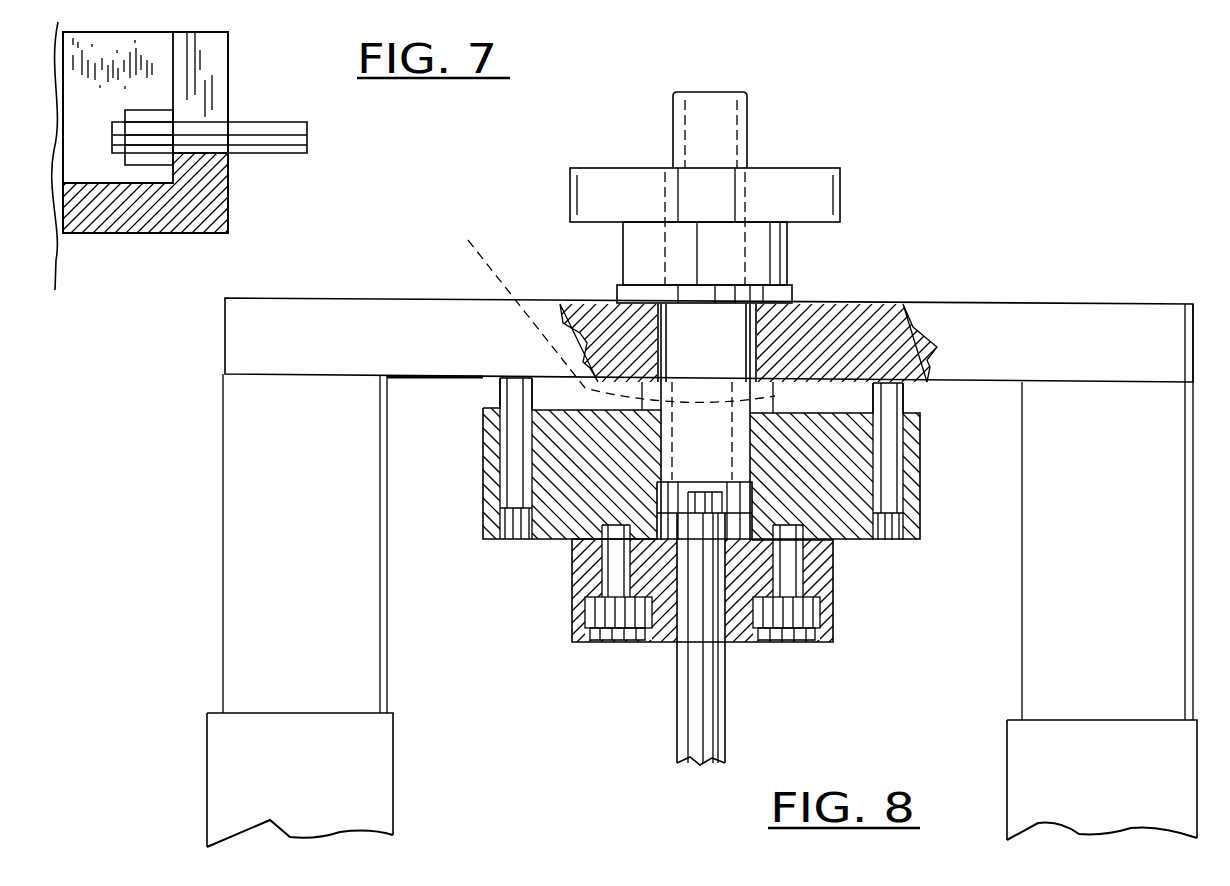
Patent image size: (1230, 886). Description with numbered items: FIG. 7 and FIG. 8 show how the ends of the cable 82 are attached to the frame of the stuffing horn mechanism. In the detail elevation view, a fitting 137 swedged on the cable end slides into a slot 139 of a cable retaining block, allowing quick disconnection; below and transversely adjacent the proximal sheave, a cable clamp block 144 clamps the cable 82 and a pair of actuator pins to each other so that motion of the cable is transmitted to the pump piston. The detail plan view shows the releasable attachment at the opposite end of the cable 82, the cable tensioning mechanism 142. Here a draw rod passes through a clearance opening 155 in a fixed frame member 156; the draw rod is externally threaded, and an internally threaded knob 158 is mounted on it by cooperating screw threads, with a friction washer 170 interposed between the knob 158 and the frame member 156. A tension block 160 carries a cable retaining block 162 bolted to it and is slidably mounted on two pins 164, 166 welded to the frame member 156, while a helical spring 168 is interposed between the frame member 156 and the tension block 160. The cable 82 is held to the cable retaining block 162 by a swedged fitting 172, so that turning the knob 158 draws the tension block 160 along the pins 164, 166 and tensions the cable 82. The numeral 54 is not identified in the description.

In FIG. 8, the bolt head 54 is at (747, 100).
In FIG. 7, the cable 82 is at (270, 128).
In FIG. 8, the cable 82 is at (703, 733).
In FIG. 7, the fitting 137 is at (148, 128).
In FIG. 7, the slot 139 is at (218, 97).
In FIG. 8, the cable tensioning mechanism 142 is at (487, 407).
In FIG. 7, the cable clamp block 144 is at (205, 198).
In FIG. 8, the clearance opening 155 is at (753, 300).
In FIG. 8, the fixed frame member 156 is at (460, 317).
In FIG. 8, the knob 158 is at (840, 170).
In FIG. 8, the tension block 160 is at (483, 488).
In FIG. 8, the cable retaining block 162 is at (577, 605).
In FIG. 8, the pin 164 is at (503, 445).
In FIG. 8, the pin 166 is at (868, 447).
In FIG. 8, the helical spring 168 is at (602, 312).
In FIG. 8, the friction washer 170 is at (603, 288).
In FIG. 8, the swedged fitting 172 is at (787, 548).